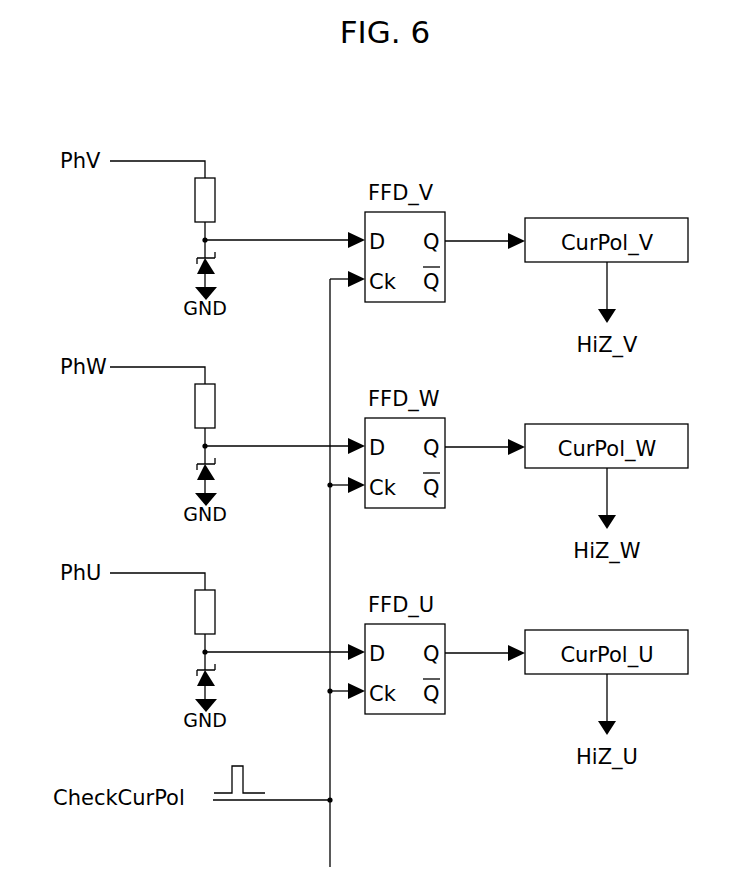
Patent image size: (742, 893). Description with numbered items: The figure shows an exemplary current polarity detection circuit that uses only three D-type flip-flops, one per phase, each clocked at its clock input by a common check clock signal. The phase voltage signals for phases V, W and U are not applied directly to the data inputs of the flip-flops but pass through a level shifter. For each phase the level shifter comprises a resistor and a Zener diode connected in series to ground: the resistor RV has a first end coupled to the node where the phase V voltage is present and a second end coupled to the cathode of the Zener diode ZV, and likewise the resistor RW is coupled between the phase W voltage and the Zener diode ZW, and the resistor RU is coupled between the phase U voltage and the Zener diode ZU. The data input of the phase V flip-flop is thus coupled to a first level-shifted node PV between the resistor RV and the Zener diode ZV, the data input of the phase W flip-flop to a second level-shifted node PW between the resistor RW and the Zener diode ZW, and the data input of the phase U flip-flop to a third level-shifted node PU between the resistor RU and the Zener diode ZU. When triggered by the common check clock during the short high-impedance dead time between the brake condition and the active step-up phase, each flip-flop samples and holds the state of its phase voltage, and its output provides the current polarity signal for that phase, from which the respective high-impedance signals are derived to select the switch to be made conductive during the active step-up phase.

The resistor RV is at (207, 204).
The first level-shifted node PV is at (203, 240).
The Zener diode ZV is at (181, 283).
The resistor RW is at (231, 397).
The second level-shifted node PW is at (246, 434).
The Zener diode ZW is at (164, 482).
The resistor RU is at (229, 603).
The third level-shifted node PU is at (246, 640).
The Zener diode ZU is at (164, 688).